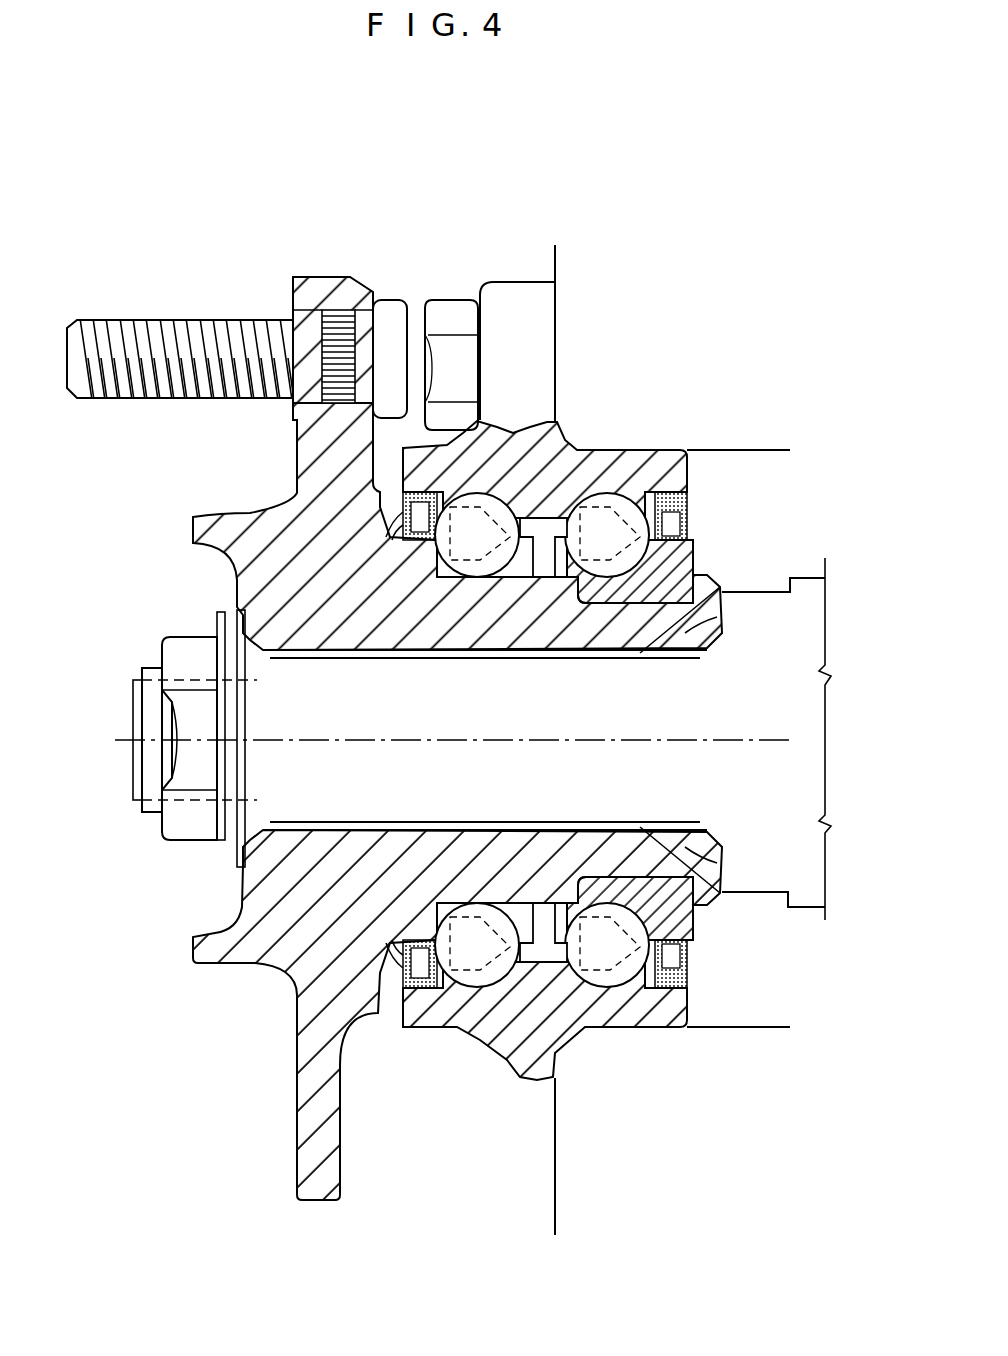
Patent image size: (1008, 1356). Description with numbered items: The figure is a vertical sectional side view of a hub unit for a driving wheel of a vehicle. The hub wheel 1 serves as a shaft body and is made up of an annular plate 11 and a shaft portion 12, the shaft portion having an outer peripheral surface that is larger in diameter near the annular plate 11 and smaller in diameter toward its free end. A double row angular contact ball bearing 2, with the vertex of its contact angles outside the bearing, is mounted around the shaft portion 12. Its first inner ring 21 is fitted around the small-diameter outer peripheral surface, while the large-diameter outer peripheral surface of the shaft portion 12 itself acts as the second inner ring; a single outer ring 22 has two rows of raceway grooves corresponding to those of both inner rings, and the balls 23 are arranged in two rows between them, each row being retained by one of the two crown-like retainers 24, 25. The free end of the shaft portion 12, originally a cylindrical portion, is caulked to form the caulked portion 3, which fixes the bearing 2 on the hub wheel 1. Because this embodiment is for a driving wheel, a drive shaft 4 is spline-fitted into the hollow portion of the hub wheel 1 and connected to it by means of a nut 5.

The hub wheel 1 is at (190, 573).
The double row angular contact ball bearing 2 is at (500, 1061).
The caulked portion 3 is at (712, 597).
The drive shaft 4 is at (827, 632).
The nut 5 is at (183, 832).
The annular plate 11 is at (318, 292).
The shaft portion 12 is at (412, 637).
The first inner ring 21 is at (660, 597).
The outer ring 22 is at (598, 458).
The balls 23 is at (457, 562).
The crown-like retainer 24 is at (524, 562).
The crown-like retainer 25 is at (562, 574).